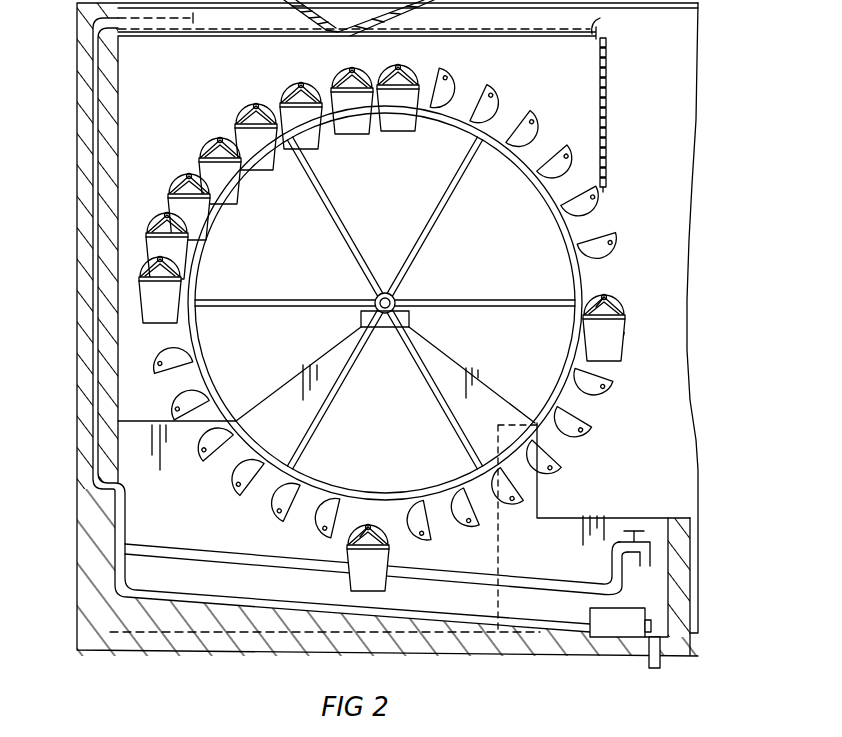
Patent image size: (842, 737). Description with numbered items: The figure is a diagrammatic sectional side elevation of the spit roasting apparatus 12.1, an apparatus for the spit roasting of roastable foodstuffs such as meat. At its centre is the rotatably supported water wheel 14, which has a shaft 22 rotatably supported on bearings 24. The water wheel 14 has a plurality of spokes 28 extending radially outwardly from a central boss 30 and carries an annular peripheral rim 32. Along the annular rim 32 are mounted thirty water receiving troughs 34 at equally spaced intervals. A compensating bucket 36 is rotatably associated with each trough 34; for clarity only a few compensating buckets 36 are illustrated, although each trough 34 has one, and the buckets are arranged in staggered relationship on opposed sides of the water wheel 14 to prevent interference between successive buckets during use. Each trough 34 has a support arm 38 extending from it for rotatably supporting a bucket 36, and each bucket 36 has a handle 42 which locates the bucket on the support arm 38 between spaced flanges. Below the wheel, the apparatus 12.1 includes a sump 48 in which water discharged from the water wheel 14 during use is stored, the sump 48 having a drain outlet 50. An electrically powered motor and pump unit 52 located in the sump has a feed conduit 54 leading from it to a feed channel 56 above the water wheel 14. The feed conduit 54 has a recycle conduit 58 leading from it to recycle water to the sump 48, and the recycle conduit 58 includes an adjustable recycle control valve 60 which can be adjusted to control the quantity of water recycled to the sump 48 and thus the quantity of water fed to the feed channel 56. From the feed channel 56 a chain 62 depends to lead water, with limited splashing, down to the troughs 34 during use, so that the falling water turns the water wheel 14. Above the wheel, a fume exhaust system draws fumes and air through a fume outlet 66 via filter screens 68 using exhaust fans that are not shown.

The spit roasting apparatus 12.1 is at (62, 106).
The water wheel 14 is at (399, 330).
The shaft 22 is at (383, 327).
The bearings 24 is at (372, 294).
The spokes 28 is at (441, 205).
The central boss 30 is at (400, 297).
The annular peripheral rim 32 is at (580, 228).
The water receiving troughs 34 is at (488, 95).
The compensating bucket 36 is at (246, 170).
The support arm 38 is at (535, 118).
The handle 42 is at (622, 308).
The sump 48 is at (653, 524).
The drain outlet 50 is at (662, 668).
The motor and pump unit 52 is at (638, 628).
The feed conduit 54 is at (95, 157).
The feed channel 56 is at (600, 18).
The recycle conduit 58 is at (540, 586).
The recycle control valve 60 is at (628, 520).
The chain 62 is at (606, 130).
The fume outlet 66 is at (343, 32).
The filter screens 68 is at (312, 34).